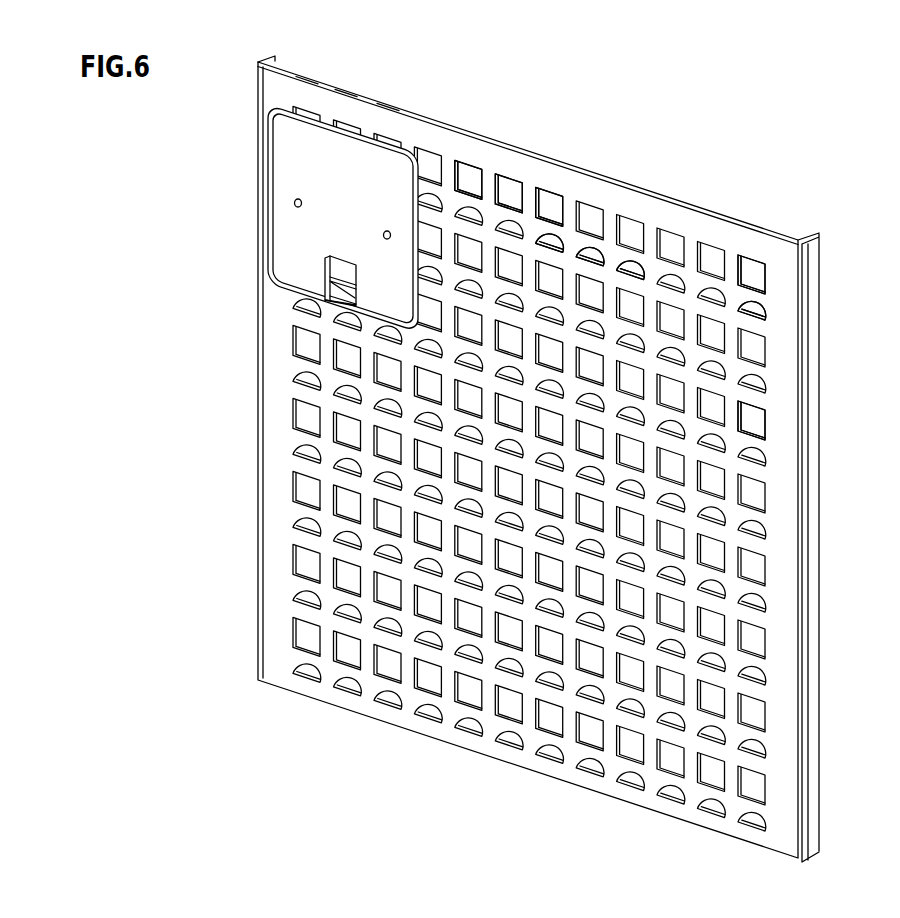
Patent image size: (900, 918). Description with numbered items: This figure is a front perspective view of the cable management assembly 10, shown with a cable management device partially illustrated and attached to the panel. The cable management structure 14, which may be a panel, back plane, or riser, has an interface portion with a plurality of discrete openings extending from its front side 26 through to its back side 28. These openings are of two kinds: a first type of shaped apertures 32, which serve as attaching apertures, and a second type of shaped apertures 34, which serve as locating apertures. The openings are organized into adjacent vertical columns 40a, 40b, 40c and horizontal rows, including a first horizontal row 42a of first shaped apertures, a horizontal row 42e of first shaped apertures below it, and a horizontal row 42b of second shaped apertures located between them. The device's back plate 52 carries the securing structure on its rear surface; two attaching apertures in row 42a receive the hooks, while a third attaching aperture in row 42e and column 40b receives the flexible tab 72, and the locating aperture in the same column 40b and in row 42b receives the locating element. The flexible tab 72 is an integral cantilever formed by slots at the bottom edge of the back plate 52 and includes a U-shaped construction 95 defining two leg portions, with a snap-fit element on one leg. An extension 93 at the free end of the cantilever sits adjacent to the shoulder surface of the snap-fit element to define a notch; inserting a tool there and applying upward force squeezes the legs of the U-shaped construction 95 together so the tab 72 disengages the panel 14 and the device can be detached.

The cable management assembly 10 is at (208, 688).
The cable management structure 14 is at (715, 228).
The front side 26 is at (280, 513).
The back side 28 is at (672, 190).
The first type of shaped apertures 32 is at (548, 190).
The second type of shaped apertures 34 is at (628, 265).
The vertical column 40a is at (307, 96).
The vertical column 40b is at (346, 108).
The vertical column 40c is at (388, 125).
The first horizontal row 42a is at (782, 286).
The horizontal row 42b is at (782, 322).
The horizontal row 42e is at (782, 428).
The back plate 52 is at (288, 243).
The flexible tab 72 is at (341, 266).
The extension 93 is at (345, 298).
The U-shaped construction 95 is at (334, 307).